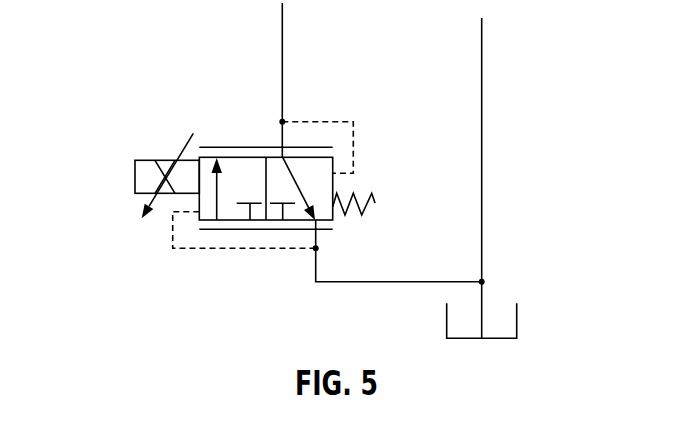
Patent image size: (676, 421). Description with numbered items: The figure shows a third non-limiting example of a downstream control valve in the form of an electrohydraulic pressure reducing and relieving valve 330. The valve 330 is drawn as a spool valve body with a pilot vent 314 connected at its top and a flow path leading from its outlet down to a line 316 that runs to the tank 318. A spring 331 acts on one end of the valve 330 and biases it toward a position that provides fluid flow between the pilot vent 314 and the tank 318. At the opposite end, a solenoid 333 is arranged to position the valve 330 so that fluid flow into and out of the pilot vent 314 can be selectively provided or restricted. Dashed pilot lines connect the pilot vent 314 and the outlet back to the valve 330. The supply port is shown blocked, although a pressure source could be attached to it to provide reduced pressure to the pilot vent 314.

The pilot vent 314 is at (282, 22).
The return line 316 is at (482, 55).
The tank 318 is at (498, 340).
The electrohydraulic pressure reducing and relieving valve 330 is at (157, 112).
The spring 331 is at (360, 213).
The solenoid 333 is at (135, 178).